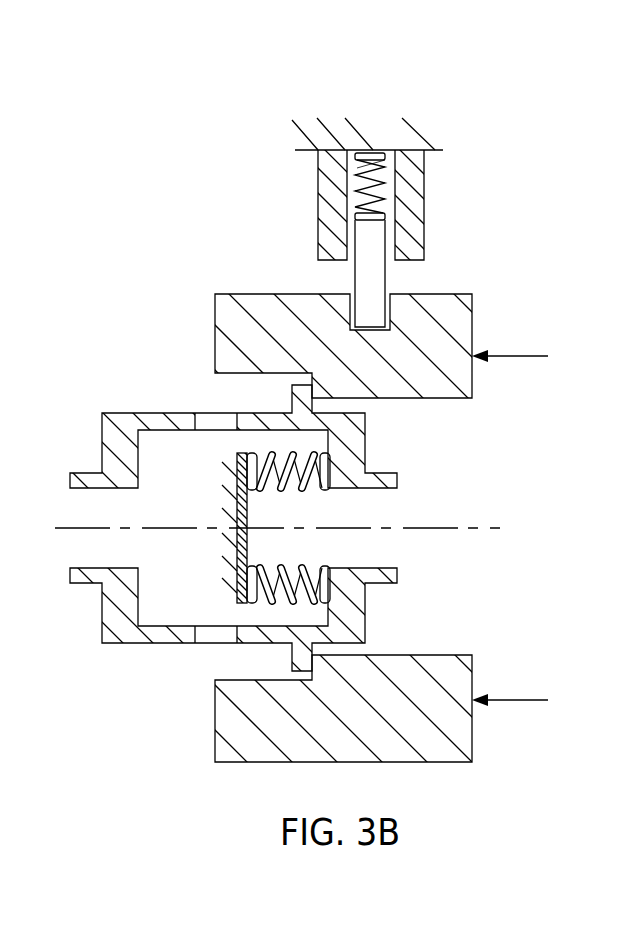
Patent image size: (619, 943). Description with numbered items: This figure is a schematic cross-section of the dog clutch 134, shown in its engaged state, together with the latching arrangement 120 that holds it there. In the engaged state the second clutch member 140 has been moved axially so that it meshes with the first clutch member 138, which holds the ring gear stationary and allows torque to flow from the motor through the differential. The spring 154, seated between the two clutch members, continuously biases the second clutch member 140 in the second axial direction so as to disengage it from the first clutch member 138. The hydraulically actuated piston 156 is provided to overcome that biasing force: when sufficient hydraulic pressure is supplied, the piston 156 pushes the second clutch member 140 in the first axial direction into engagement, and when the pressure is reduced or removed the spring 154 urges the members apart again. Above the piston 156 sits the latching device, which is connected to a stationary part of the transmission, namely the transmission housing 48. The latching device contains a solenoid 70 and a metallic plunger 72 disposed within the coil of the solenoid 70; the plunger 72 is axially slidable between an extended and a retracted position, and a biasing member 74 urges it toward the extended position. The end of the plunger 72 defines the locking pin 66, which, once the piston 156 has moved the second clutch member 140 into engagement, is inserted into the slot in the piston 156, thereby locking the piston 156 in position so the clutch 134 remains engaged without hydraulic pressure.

The drive assembly 120 is at (30, 88).
The transmission housing 48 is at (375, 132).
The solenoid 70 is at (418, 188).
The biasing member 74 is at (358, 196).
The metallic plunger 72 is at (377, 277).
The locking pin 66 is at (358, 320).
The hydraulically actuated piston 156 is at (447, 309).
The first clutch member 138 is at (128, 428).
The second clutch member 140 is at (357, 615).
The spring 154 is at (308, 485).
The dog clutch 134 is at (132, 670).